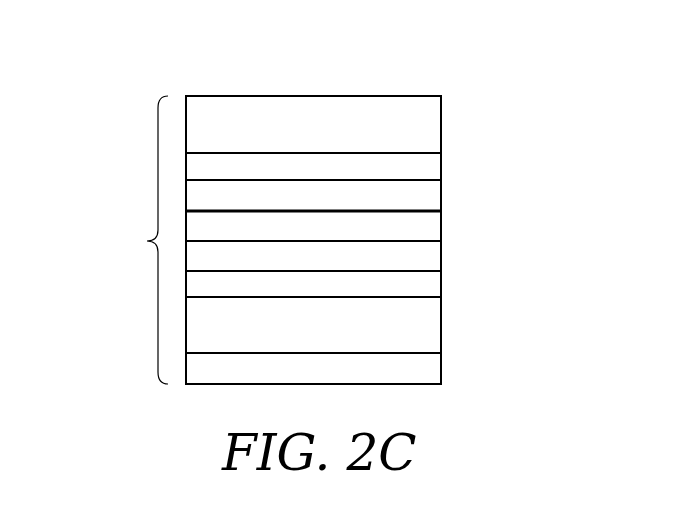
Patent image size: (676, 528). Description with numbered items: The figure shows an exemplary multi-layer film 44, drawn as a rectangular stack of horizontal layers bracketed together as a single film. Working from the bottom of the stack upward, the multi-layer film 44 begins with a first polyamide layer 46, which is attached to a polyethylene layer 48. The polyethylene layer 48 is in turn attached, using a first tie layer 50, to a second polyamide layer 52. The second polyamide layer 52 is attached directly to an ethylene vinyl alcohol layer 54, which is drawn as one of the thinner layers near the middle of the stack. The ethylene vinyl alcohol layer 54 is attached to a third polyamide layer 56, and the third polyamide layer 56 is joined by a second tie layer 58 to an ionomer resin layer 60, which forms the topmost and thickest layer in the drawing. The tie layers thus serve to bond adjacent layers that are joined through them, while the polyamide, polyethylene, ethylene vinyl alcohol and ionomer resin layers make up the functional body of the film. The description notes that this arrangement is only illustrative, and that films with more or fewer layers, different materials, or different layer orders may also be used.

The multi-layer film 44 is at (141, 240).
The first polyamide layer 46 is at (441, 365).
The polyethylene layer 48 is at (441, 328).
The first tie layer 50 is at (441, 289).
The second polyamide layer 52 is at (441, 256).
The ethylene vinyl alcohol layer 54 is at (441, 229).
The third polyamide layer 56 is at (441, 197).
The second tie layer 58 is at (441, 169).
The ionomer resin layer 60 is at (441, 131).